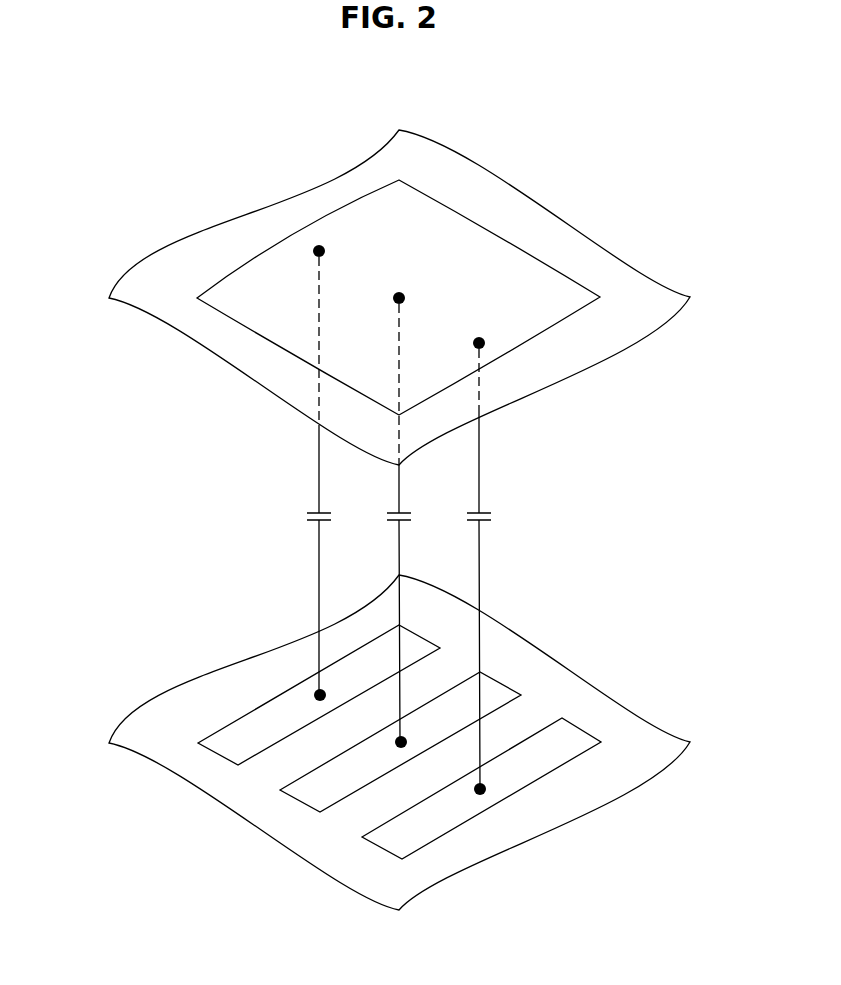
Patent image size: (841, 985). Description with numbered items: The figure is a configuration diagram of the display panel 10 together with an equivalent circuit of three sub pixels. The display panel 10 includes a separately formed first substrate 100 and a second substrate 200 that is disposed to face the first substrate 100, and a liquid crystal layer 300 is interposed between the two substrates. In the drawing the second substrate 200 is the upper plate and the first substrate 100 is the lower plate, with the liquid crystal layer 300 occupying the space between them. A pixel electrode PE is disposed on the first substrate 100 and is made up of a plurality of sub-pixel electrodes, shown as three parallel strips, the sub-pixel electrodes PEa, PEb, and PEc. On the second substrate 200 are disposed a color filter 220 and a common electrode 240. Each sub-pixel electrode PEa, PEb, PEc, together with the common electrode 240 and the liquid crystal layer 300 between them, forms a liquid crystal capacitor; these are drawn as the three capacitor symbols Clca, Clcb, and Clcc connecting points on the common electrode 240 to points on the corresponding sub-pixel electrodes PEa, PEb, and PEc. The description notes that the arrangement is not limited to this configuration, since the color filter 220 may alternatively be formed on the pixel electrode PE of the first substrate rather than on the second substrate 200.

The display panel 10 is at (140, 132).
The second substrate 200 is at (646, 250).
The color filter 220 is at (477, 225).
The common electrode 240 is at (547, 210).
The liquid crystal layer 300 is at (178, 530).
The first substrate 100 is at (622, 689).
The liquid crystal capacitor Clca is at (296, 473).
The liquid crystal capacitor Clcb is at (377, 520).
The liquid crystal capacitor Clcc is at (457, 566).
The pixel electrode PE is at (282, 930).
The sub-pixel electrode PEa is at (215, 752).
The sub-pixel electrode PEb is at (295, 793).
The sub-pixel electrode PEc is at (378, 845).